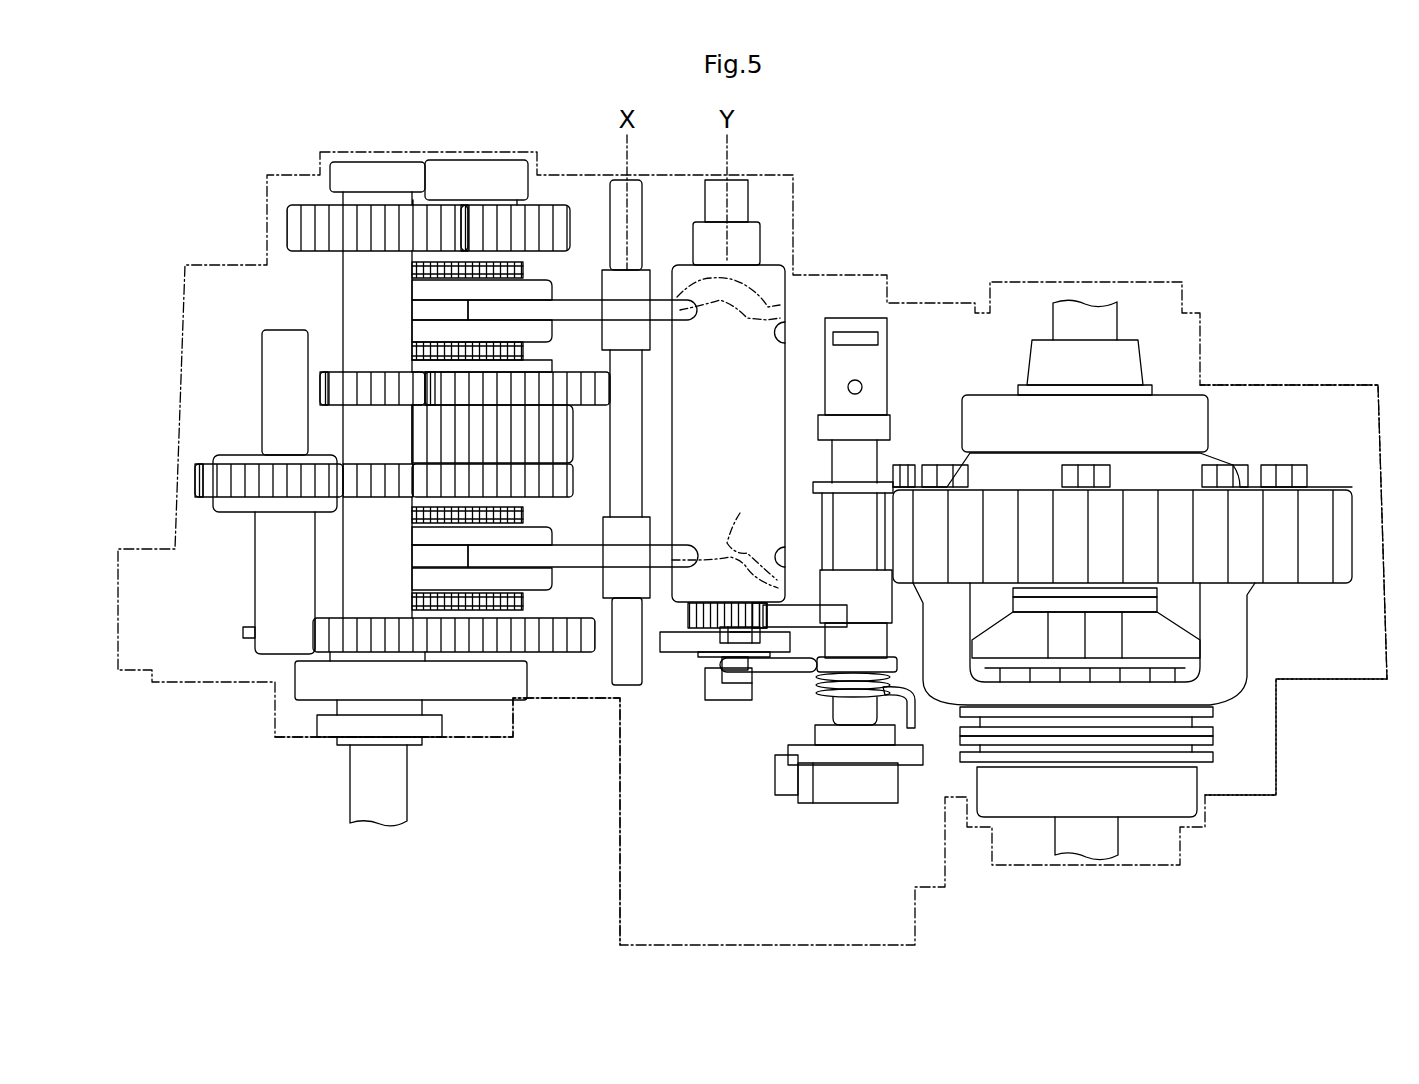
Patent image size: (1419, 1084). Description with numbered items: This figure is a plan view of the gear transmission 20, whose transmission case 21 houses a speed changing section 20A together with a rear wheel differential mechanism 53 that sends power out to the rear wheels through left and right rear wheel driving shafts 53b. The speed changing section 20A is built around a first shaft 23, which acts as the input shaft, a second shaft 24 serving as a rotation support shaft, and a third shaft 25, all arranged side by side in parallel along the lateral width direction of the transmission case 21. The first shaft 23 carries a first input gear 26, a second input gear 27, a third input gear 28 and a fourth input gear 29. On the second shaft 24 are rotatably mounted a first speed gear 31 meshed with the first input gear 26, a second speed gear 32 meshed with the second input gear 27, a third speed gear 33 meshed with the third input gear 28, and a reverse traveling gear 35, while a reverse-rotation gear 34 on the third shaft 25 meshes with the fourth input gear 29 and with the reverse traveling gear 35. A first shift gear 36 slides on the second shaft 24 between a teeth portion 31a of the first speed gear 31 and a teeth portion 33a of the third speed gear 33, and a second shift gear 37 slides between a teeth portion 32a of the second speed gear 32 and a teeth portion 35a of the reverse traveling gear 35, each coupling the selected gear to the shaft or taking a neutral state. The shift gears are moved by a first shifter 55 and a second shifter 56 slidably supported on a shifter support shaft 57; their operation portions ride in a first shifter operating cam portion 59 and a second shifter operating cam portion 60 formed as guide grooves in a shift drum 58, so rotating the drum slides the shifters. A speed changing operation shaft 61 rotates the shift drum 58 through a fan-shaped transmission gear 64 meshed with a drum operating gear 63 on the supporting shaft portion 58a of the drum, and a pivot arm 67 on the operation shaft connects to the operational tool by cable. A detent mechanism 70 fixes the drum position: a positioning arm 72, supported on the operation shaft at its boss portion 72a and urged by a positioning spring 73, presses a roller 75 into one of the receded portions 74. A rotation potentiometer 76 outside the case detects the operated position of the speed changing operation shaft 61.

The gear transmission 20 is at (908, 208).
The speed changing section 20A is at (540, 765).
The transmission case 21 is at (1239, 385).
The first shaft 23 is at (365, 770).
The second shaft 24 is at (492, 200).
The third shaft 25 is at (280, 340).
The first input gear 26 is at (347, 385).
The second input gear 27 is at (325, 617).
The third input gear 28 is at (293, 223).
The fourth input gear 29 is at (398, 473).
The first speed gear 31 is at (543, 377).
The teeth portion 31a is at (410, 355).
The second speed gear 32 is at (568, 650).
The teeth portion 32a is at (410, 612).
The third speed gear 33 is at (540, 212).
The teeth portion 33a is at (410, 266).
The reverse-rotation gear 34 is at (205, 482).
The reverse traveling gear 35 is at (565, 482).
The teeth portion 35a is at (410, 515).
The first shift gear 36 is at (540, 292).
The second shift gear 37 is at (550, 577).
The rear wheel differential mechanism 53 is at (1285, 733).
The rear wheel driving shaft 53b is at (1103, 323).
The first shifter 55 is at (575, 305).
The second shifter 56 is at (567, 556).
The shifter support shaft 57 is at (635, 205).
The shift drum 58 is at (772, 277).
The supporting shaft portion 58a is at (722, 700).
The first shifter operating cam portion 59 is at (738, 310).
The second shifter operating cam portion 60 is at (725, 538).
The speed changing operation shaft 61 is at (870, 452).
The drum operating gear 63 is at (697, 625).
The transmission gear 64 is at (793, 613).
The pivot arm 67 is at (862, 337).
The detent mechanism 70 is at (742, 735).
The positioning arm 72 is at (781, 670).
The boss portion 72a is at (885, 655).
The positioning spring 73 is at (893, 685).
The receded portion 74 is at (677, 646).
The roller 75 is at (790, 641).
The rotation potentiometer 76 is at (862, 808).